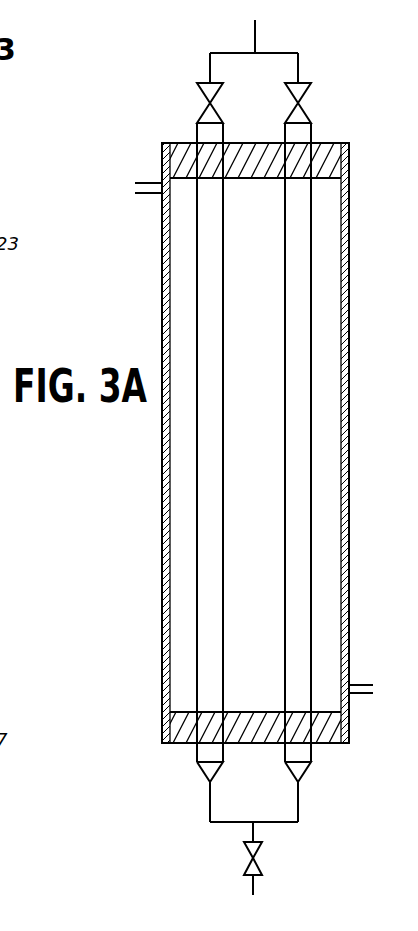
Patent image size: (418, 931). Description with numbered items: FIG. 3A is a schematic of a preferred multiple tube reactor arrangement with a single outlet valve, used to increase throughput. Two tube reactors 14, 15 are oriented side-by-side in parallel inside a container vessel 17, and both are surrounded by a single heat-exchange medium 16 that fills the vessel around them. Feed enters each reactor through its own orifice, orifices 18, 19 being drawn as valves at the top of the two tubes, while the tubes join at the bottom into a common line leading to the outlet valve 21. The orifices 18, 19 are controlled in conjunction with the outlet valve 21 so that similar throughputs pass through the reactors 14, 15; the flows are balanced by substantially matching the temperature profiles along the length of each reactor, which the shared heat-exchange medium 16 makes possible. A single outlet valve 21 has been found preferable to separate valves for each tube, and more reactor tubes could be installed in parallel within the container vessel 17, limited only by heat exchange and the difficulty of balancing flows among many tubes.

The tube reactor 14 is at (302, 422).
The tube reactor 15 is at (210, 503).
The heat-exchange medium 16 is at (160, 184).
The container vessel 17 is at (349, 543).
The orifice 18 is at (303, 112).
The orifice 19 is at (210, 92).
The outlet valve 21 is at (250, 852).